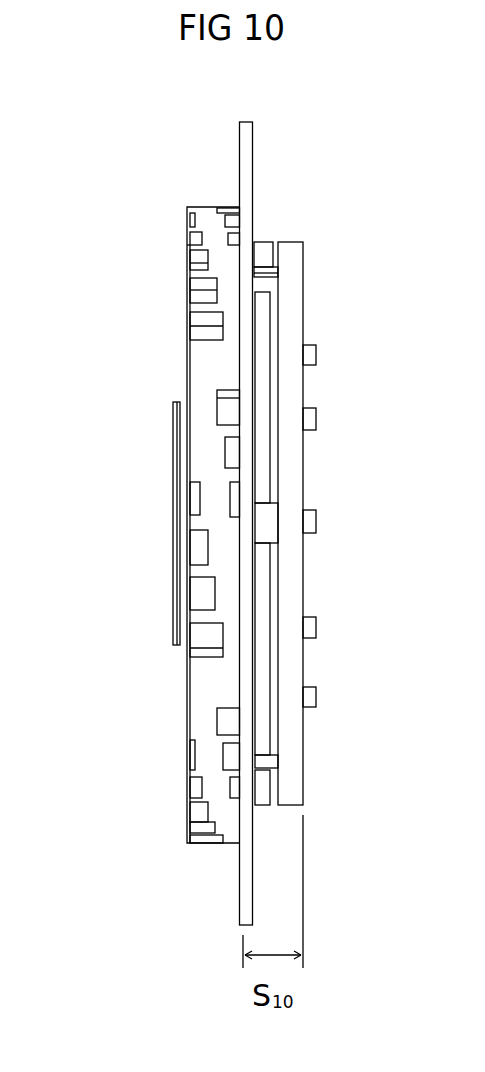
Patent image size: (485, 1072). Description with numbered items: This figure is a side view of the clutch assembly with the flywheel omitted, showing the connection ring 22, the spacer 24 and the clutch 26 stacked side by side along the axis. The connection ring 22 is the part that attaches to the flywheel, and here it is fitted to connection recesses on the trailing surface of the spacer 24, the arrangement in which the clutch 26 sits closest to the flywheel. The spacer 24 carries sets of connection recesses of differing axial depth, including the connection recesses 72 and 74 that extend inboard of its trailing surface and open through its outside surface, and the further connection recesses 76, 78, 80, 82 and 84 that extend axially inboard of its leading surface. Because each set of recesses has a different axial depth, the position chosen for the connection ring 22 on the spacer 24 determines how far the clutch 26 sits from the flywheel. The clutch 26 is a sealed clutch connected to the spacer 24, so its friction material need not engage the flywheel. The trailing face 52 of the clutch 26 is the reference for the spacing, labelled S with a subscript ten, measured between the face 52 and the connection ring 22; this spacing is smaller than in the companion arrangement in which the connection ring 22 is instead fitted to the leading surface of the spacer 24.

The connection ring 22 is at (247, 880).
The spacer 24 is at (203, 687).
The clutch 26 is at (298, 467).
The trailing face 52 is at (307, 738).
The connection recesses 72 is at (228, 447).
The connection recesses 74 is at (223, 407).
The further connection recesses 76 is at (185, 445).
The further connection recesses 78 is at (197, 495).
The further connection recesses 80 is at (200, 543).
The further connection recesses 82 is at (200, 588).
The further connection recesses 84 is at (203, 635).